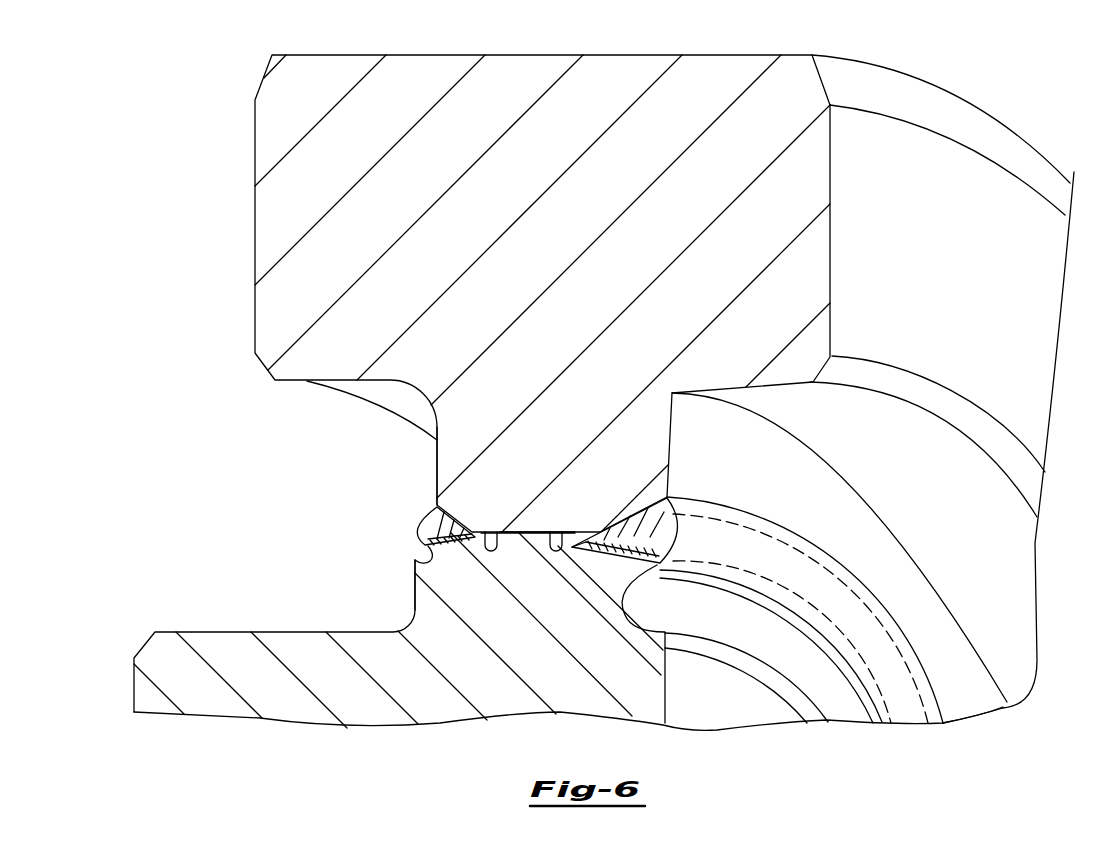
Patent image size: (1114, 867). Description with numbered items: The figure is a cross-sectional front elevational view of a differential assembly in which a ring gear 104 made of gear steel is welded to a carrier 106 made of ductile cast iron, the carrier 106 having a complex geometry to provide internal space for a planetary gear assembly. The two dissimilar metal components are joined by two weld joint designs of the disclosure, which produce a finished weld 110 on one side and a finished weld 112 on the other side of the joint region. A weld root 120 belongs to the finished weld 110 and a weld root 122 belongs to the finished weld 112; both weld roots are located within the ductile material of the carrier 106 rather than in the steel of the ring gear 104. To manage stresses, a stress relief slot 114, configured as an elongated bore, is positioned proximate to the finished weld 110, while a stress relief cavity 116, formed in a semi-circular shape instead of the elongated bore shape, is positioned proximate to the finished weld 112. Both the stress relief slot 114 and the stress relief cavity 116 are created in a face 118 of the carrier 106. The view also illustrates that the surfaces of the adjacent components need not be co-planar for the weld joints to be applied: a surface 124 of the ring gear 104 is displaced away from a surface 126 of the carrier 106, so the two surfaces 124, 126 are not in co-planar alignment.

The ring gear 104 is at (785, 85).
The carrier 106 is at (203, 700).
The finished weld 110 is at (414, 563).
The finished weld 112 is at (640, 560).
The stress relief slot 114 is at (497, 549).
The stress relief cavity 116 is at (552, 548).
The face 118 is at (537, 522).
The weld root 120 is at (478, 546).
The weld root 122 is at (580, 548).
The surface 124 is at (440, 452).
The surface 126 is at (424, 600).